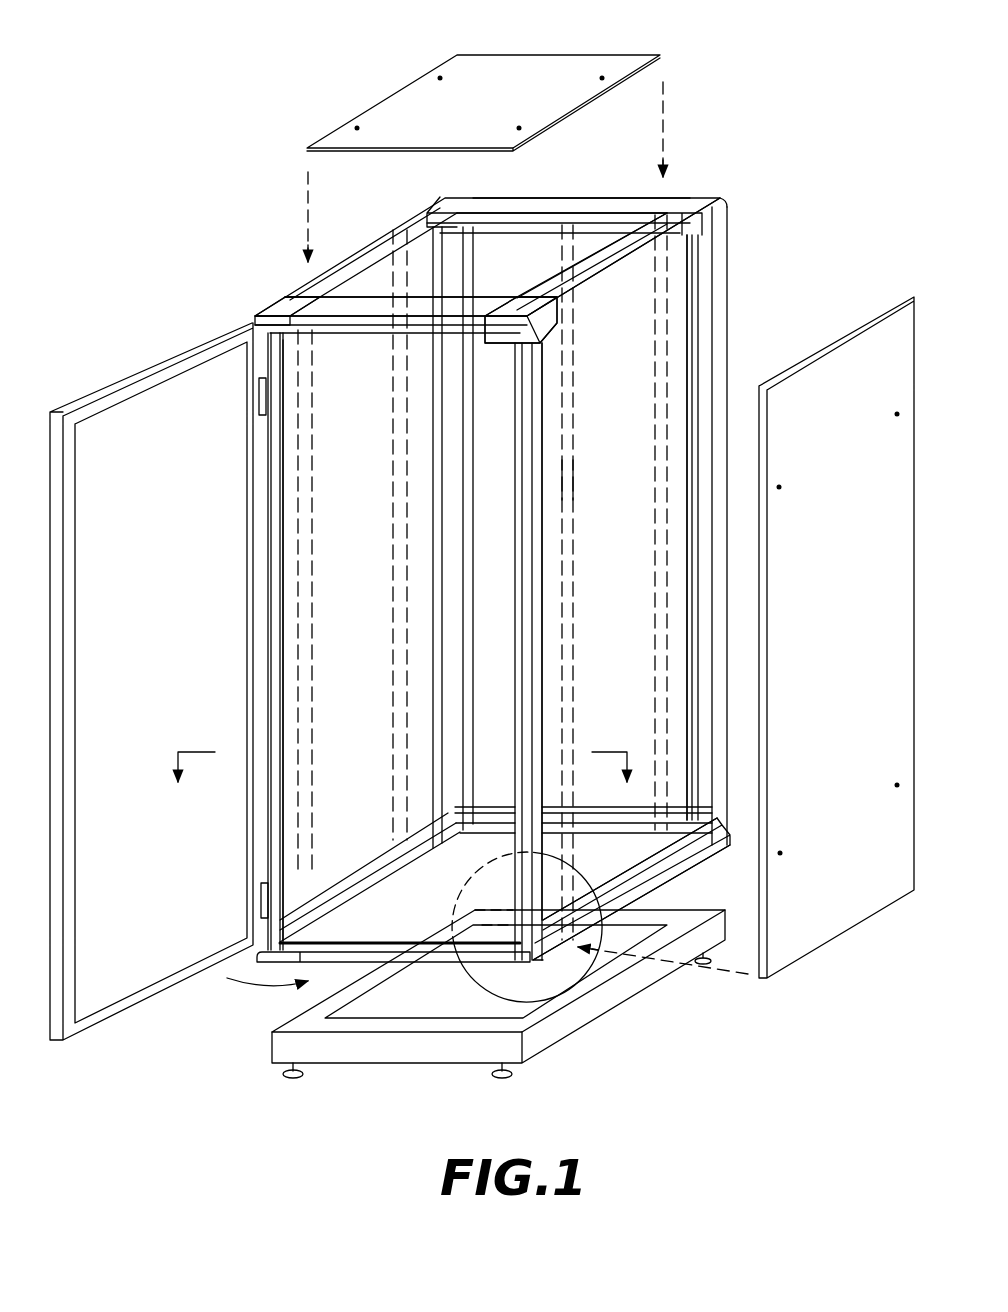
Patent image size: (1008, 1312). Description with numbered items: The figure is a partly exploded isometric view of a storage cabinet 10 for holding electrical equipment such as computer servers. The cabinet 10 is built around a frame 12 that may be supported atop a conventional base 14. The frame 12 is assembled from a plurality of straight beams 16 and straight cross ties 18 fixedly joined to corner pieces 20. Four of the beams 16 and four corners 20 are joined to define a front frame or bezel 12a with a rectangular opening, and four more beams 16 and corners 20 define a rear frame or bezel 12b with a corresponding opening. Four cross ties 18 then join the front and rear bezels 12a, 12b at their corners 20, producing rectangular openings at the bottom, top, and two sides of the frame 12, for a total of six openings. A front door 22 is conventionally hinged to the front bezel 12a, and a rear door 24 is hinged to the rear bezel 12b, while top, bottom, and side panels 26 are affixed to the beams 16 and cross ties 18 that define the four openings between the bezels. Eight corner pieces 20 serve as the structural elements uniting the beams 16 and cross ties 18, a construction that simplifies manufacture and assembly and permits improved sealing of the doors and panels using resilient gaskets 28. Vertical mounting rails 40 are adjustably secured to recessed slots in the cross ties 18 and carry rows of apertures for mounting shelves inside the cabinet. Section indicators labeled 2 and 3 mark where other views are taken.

The cabinet 10 is at (212, 232).
The frame 12 is at (728, 332).
The front frame or bezel 12a is at (373, 330).
The rear frame or bezel 12b is at (533, 197).
The base 14 is at (607, 1007).
The beam 16 is at (660, 195).
The cross tie 18 is at (593, 293).
The corner piece 20 is at (448, 200).
The front door 22 is at (151, 633).
The rear door 24 is at (603, 528).
The panel 26 is at (468, 116).
The resilient gasket 28 is at (527, 228).
The vertical mounting rail 40 is at (570, 478).
The section line of FIG. 2 is at (402, 777).
The detail circle of FIG. 3 is at (487, 1000).